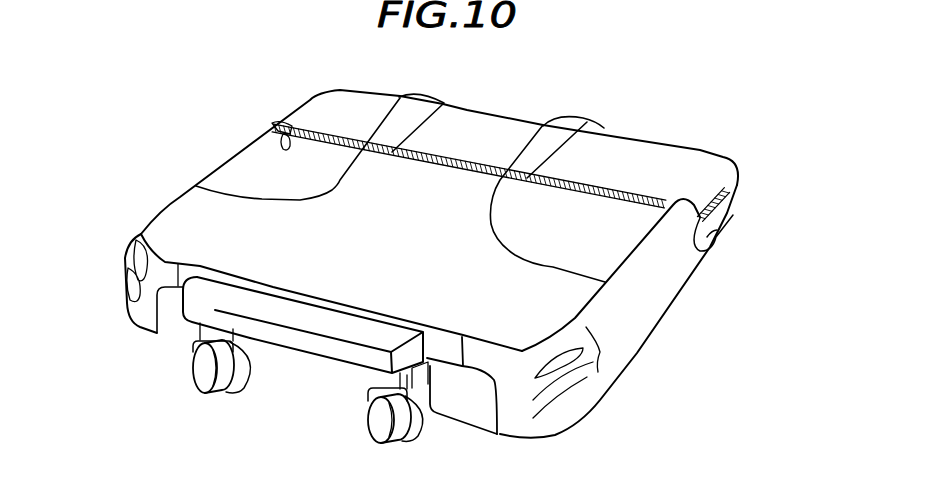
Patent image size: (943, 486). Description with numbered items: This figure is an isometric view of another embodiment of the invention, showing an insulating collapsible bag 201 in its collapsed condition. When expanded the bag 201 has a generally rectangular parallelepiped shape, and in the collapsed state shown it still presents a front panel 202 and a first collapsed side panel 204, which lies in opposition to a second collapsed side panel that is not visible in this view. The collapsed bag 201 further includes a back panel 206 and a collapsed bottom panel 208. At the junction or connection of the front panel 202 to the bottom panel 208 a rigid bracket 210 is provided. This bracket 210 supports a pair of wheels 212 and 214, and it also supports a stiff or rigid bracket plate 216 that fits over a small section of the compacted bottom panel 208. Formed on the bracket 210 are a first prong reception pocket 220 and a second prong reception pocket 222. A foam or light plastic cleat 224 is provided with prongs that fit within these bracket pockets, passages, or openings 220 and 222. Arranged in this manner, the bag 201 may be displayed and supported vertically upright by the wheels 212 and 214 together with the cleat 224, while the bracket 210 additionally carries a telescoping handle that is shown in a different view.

The collapsible bag 201 is at (517, 107).
The front panel 202 is at (432, 240).
The first collapsed side panel 204 is at (667, 312).
The back panel 206 is at (507, 430).
The collapsed bottom panel 208 is at (173, 273).
The rigid bracket 210 is at (462, 410).
The wheel 212 is at (210, 387).
The wheel 214 is at (370, 427).
The bracket plate 216 is at (167, 330).
The first prong reception pocket 220 is at (249, 328).
The second prong reception pocket 222 is at (463, 372).
The cleat 224 is at (320, 317).